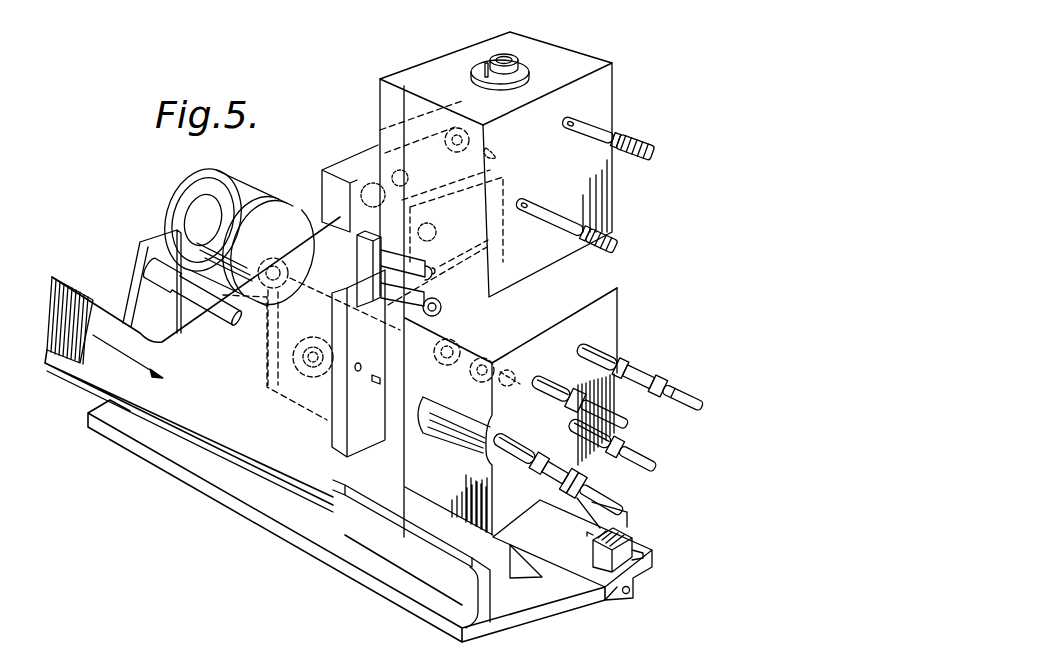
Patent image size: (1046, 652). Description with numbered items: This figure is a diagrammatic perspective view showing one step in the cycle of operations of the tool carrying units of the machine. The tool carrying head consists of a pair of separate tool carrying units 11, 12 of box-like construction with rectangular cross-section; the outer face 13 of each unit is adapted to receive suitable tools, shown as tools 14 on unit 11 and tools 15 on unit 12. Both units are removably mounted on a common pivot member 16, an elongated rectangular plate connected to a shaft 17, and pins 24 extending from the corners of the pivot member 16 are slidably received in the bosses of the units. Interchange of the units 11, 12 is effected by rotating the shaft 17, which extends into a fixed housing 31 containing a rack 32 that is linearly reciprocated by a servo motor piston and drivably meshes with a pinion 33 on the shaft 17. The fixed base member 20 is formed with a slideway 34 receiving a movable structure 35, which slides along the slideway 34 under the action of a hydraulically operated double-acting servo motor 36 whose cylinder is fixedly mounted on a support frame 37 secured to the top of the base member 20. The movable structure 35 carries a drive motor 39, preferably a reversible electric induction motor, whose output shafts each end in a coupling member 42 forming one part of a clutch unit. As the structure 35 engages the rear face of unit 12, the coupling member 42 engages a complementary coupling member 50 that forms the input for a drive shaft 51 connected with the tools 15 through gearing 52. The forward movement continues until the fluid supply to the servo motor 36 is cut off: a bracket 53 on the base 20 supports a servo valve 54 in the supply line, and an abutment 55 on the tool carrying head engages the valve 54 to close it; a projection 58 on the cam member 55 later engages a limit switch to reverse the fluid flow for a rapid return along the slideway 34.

The tool carrying unit 11 is at (645, 67).
The tool carrying unit 12 is at (660, 312).
The outer face 13 is at (603, 115).
The tools 14 is at (653, 167).
The tools 15 is at (640, 452).
The common pivot member 16 is at (497, 203).
The shaft 17 is at (436, 234).
The fixed base member 20 is at (270, 520).
The pins 24 is at (440, 292).
The fixed housing 31 is at (342, 170).
The rack 32 is at (370, 183).
The pinion 33 is at (360, 205).
The slideway 34 is at (437, 573).
The movable structure 35 is at (180, 405).
The servo motor 36 is at (215, 297).
The support frame 37 is at (140, 265).
The drive motor 39 is at (190, 182).
The coupling member 42 is at (318, 310).
The coupling member 50 is at (472, 139).
The drive shaft 51 is at (497, 155).
The gearing 52 is at (513, 368).
The bracket 53 is at (580, 567).
The servo valve 54 is at (623, 528).
The abutment 55 is at (522, 63).
The projection 58 is at (477, 65).